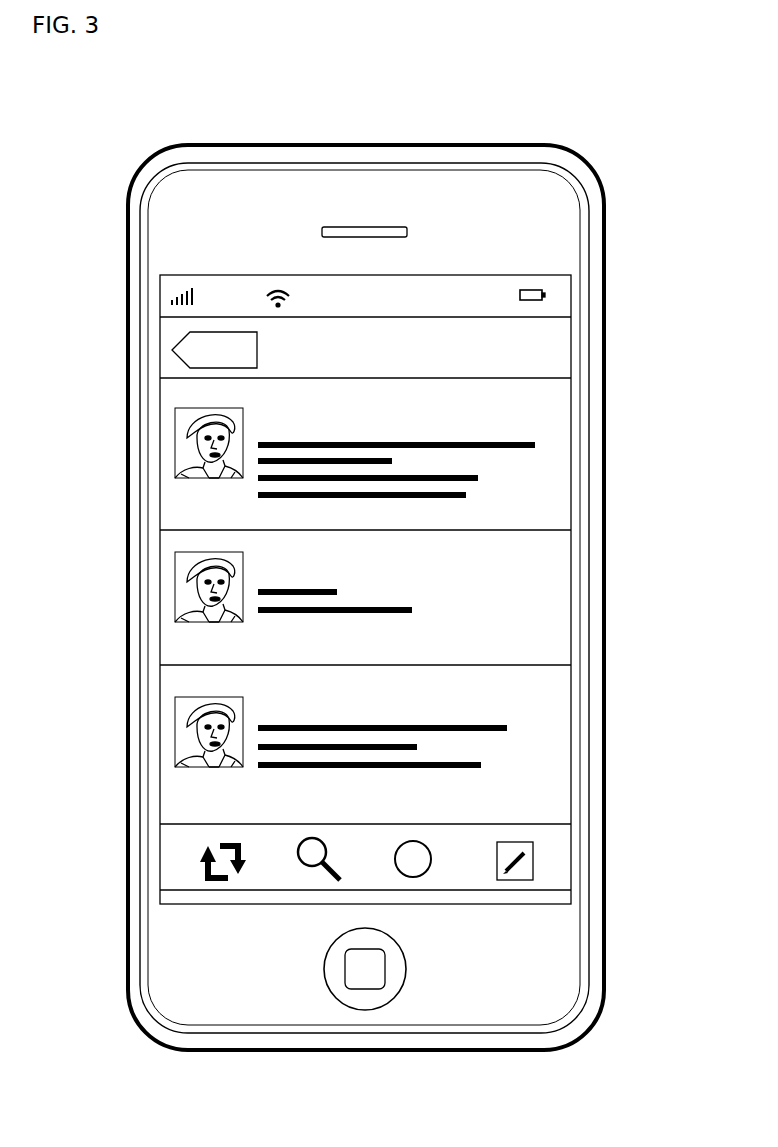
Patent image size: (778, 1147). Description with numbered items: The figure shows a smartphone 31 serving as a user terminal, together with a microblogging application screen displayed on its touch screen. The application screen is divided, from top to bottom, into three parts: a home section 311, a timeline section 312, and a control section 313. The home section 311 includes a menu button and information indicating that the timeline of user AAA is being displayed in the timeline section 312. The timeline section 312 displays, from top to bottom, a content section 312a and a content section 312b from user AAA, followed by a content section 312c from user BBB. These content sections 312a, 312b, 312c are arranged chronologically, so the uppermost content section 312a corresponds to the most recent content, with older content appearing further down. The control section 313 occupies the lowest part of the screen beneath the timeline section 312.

The smartphone 31 is at (262, 107).
The home section 311 is at (420, 333).
The timeline section 312 is at (617, 817).
The content section 312a is at (118, 388).
The content section 312b is at (118, 527).
The content section 312c is at (118, 665).
The control section 313 is at (617, 828).